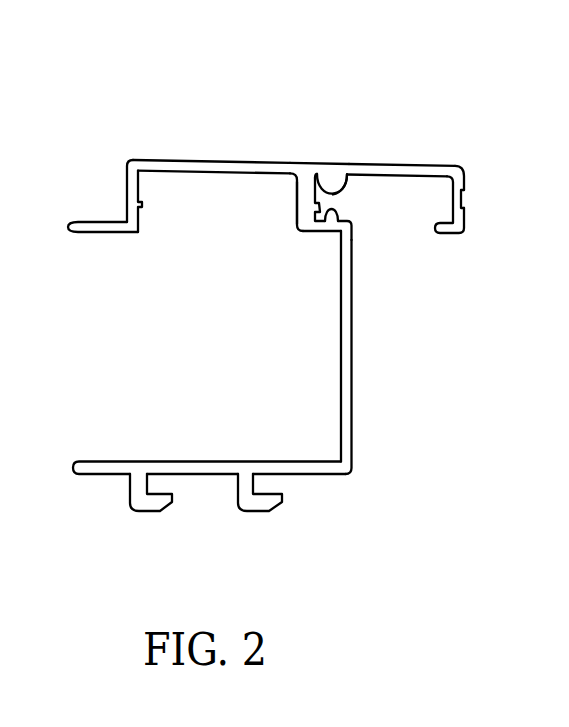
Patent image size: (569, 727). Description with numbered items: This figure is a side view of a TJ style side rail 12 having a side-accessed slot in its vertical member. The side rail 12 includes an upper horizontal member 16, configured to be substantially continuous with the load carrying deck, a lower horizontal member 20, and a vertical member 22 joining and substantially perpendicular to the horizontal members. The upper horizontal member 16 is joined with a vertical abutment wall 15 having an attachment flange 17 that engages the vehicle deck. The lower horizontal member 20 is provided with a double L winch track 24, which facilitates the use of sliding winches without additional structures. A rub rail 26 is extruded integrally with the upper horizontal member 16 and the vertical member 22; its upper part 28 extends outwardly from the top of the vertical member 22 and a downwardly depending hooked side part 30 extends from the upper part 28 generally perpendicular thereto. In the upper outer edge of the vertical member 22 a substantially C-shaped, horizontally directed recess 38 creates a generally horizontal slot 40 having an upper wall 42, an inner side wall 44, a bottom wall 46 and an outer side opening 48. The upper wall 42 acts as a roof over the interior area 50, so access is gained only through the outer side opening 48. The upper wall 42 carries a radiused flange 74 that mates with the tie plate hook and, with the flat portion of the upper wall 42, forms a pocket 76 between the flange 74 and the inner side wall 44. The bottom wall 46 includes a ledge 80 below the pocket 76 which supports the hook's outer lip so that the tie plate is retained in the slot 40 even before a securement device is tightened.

The side rail 12 is at (125, 109).
The vertical abutment wall 15 is at (126, 183).
The upper horizontal member 16 is at (187, 172).
The attachment flange 17 is at (82, 225).
The lower horizontal member 20 is at (308, 476).
The vertical member 22 is at (346, 390).
The double L winch track 24 is at (253, 503).
The rub rail 26 is at (445, 162).
The upper part 28 is at (408, 170).
The hooked side part 30 is at (462, 203).
The recess 38 is at (290, 218).
The slot 40 is at (356, 209).
The upper wall 42 is at (323, 172).
The inner side wall 44 is at (302, 204).
The bottom wall 46 is at (334, 231).
The outer side opening 48 is at (348, 216).
The interior area 50 is at (336, 201).
The radiused flange 74 is at (337, 172).
The pocket 76 is at (306, 174).
The ledge 80 is at (307, 232).